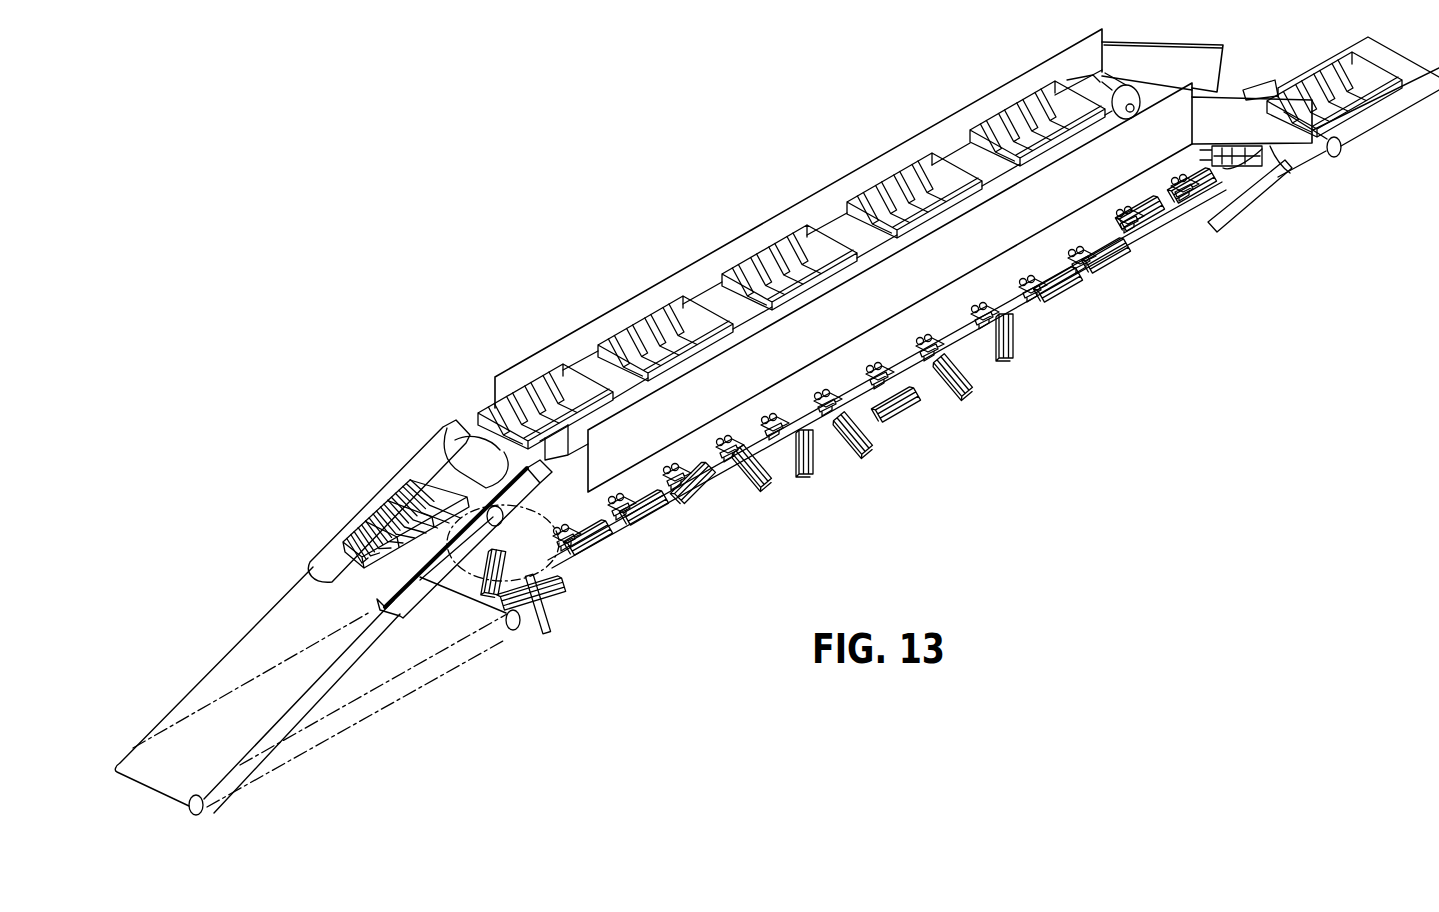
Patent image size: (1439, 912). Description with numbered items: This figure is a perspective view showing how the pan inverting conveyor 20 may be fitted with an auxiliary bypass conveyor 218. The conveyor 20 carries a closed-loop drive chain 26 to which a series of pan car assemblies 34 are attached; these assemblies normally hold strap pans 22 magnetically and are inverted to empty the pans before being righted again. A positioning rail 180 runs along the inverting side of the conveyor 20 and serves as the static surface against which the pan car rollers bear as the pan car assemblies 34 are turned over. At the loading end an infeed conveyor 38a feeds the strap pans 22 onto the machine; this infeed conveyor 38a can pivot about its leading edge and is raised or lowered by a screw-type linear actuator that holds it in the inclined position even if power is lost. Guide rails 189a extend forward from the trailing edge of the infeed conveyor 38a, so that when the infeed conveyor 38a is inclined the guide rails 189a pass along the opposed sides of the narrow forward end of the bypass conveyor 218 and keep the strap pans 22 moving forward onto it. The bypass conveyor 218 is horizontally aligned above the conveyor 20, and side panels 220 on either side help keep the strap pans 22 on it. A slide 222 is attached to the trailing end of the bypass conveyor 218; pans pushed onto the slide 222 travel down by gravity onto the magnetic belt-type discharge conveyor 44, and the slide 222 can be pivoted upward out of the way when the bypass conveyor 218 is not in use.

The pan inverting conveyor 20 is at (1105, 360).
The strap pan 22 is at (417, 532).
The drive chain 26 is at (928, 308).
The pan car assembly 34 is at (814, 472).
The infeed conveyor 38a is at (237, 746).
The discharge conveyor 44 is at (1378, 121).
The positioning rail 180 is at (673, 508).
The guide rail 189a is at (382, 497).
The bypass conveyor 218 is at (456, 452).
The side panel 220 is at (706, 283).
The slide 222 is at (1285, 137).